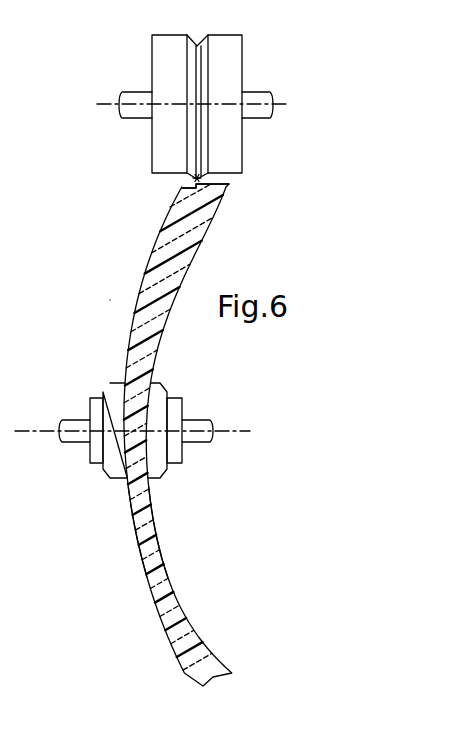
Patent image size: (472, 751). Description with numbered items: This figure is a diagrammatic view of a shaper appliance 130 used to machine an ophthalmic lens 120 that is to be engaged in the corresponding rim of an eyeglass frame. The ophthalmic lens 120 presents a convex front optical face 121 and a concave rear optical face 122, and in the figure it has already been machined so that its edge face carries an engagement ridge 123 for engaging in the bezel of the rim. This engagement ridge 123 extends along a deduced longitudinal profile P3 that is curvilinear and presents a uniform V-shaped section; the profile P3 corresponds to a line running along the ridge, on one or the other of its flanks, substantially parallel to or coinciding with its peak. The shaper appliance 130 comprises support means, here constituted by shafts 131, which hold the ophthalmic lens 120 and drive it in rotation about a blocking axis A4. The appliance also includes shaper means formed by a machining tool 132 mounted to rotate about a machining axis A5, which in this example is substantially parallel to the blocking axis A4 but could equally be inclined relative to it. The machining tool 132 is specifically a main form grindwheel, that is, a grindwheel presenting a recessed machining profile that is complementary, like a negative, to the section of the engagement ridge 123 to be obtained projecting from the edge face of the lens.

The ophthalmic lens 120 is at (156, 621).
The convex front optical face 121 is at (132, 534).
The concave rear optical face 122 is at (161, 553).
The engagement ridge 123 is at (207, 179).
The shaper appliance 130 is at (106, 288).
The shafts 131 is at (73, 420).
The machining tool 132 is at (242, 67).
The blocking axis A4 is at (245, 432).
The machining axis A5 is at (282, 104).
The deduced longitudinal profile P3 is at (197, 178).